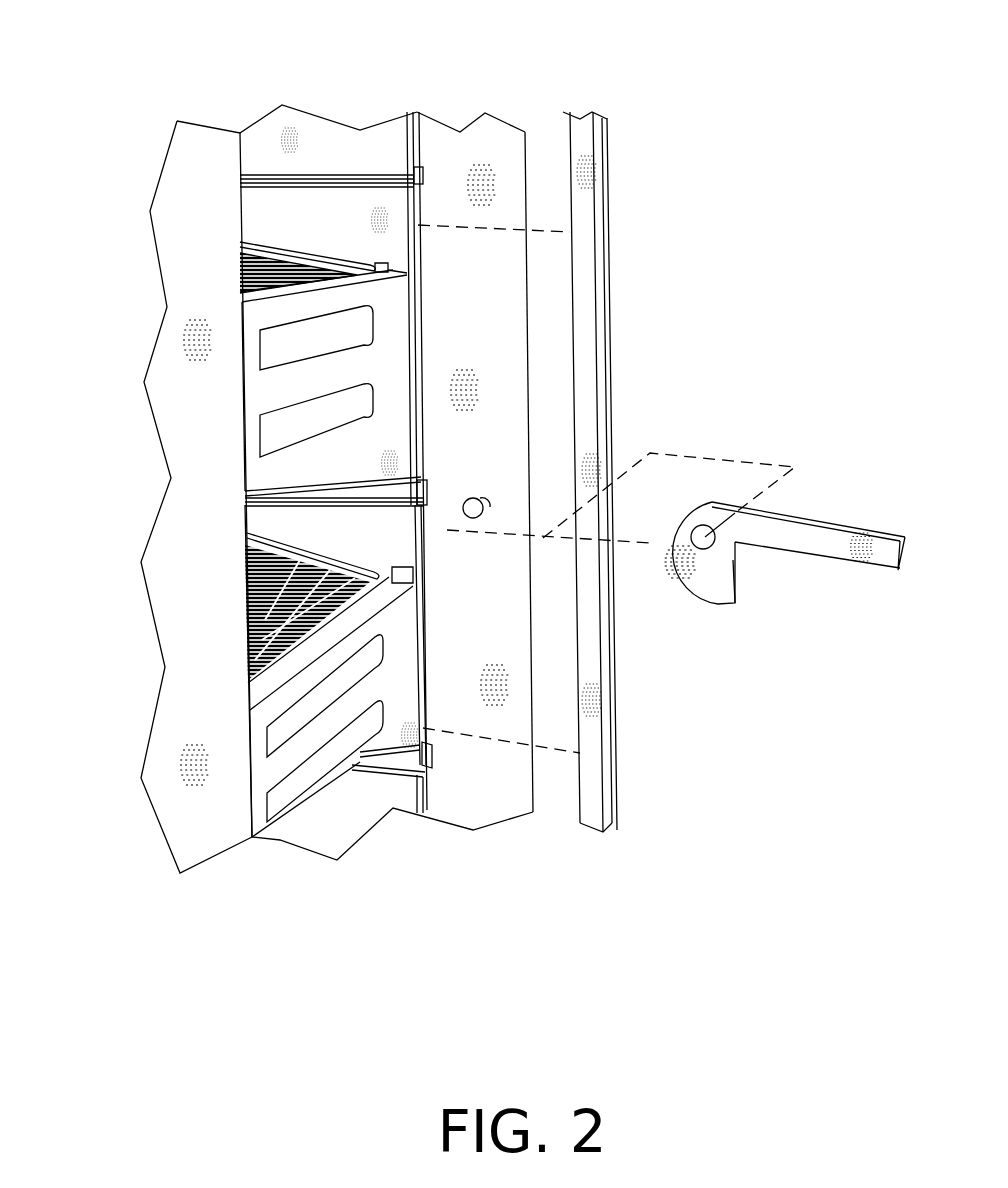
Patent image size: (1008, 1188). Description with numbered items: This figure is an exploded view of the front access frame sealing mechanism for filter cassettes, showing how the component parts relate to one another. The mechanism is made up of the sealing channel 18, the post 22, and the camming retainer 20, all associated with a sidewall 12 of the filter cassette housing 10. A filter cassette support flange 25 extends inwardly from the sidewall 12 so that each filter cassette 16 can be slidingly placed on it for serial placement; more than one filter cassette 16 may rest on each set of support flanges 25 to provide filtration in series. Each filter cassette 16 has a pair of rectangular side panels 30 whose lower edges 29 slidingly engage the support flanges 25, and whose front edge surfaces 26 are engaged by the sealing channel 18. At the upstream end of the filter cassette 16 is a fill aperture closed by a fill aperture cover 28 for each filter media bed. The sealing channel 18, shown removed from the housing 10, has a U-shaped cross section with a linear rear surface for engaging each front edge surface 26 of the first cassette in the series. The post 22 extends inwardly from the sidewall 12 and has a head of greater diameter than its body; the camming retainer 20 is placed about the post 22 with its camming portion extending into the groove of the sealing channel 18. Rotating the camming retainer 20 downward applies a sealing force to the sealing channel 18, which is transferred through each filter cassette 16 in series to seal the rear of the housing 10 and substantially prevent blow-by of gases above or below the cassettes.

The filter cassette housing 10 is at (131, 136).
The sidewall 12 is at (503, 797).
The filter cassette 16 is at (283, 387).
The sealing channel 18 is at (590, 742).
The camming retainer 20 is at (797, 560).
The post 22 is at (473, 497).
The support flange 25 is at (414, 178).
The front edge surface 26 is at (418, 307).
The fill aperture cover 28 is at (305, 710).
The lower edge 29 is at (383, 180).
The side panel 30 is at (360, 233).